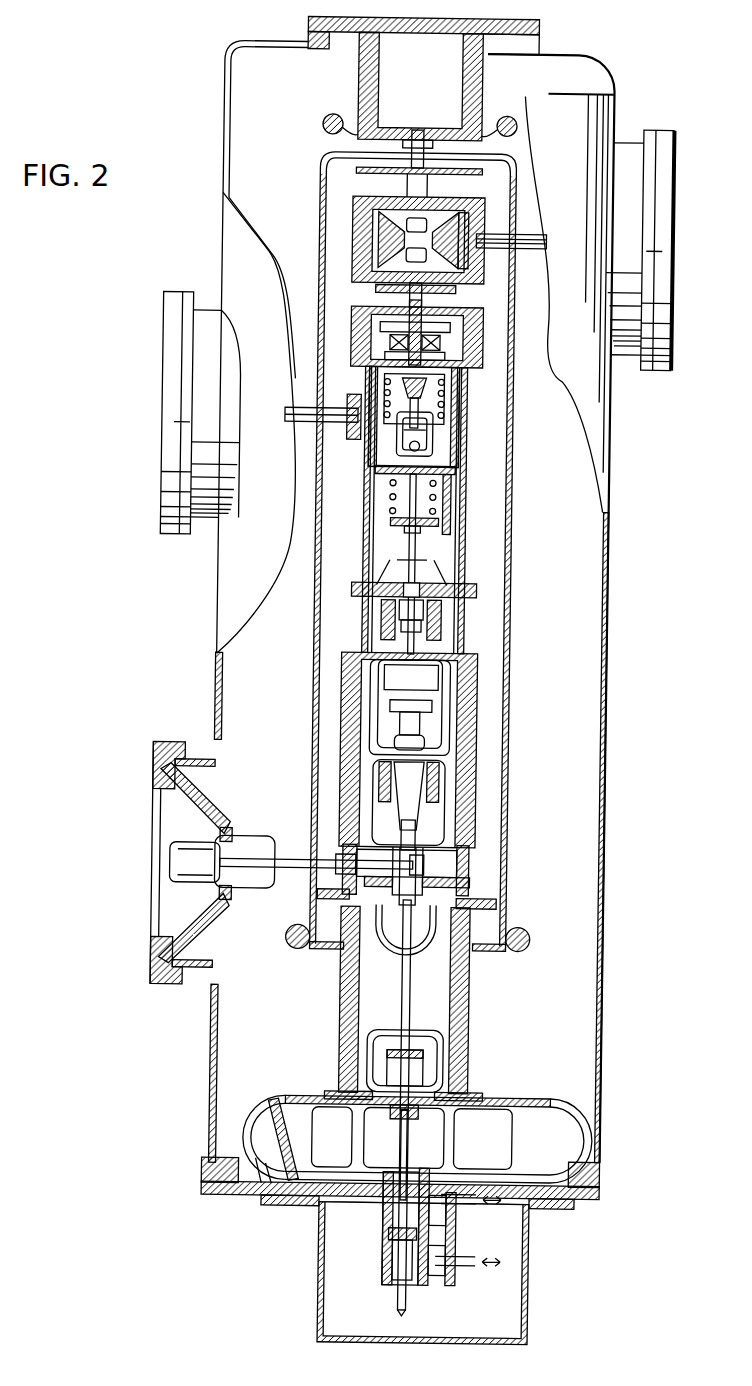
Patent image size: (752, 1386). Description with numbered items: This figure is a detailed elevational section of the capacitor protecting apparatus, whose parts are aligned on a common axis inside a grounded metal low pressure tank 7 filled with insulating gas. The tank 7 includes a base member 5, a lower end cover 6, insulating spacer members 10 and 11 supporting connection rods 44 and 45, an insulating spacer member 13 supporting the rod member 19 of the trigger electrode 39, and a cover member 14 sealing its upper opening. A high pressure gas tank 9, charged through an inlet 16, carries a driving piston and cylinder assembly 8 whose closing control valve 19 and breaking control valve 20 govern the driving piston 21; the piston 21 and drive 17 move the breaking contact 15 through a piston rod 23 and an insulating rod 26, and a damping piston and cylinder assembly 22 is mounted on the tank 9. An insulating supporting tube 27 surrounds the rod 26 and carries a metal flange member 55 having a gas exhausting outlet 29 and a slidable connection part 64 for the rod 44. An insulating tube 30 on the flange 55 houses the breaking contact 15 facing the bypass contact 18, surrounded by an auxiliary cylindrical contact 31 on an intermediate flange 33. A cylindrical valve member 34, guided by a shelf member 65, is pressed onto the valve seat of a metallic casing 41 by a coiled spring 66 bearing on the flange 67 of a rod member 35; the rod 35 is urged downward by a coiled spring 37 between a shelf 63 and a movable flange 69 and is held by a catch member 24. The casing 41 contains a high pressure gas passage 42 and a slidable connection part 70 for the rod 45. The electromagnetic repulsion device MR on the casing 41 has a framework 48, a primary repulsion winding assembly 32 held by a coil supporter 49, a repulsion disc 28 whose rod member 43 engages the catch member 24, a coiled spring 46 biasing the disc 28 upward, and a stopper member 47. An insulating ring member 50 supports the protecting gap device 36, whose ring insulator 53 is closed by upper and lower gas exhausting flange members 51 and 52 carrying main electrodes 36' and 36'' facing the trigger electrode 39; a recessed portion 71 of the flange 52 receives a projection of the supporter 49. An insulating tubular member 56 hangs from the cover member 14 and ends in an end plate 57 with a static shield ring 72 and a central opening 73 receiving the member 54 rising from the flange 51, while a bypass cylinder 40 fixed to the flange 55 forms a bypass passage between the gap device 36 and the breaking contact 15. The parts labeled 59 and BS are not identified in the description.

The base member 5 is at (606, 1193).
The lower end cover 6 is at (420, 1343).
The tank 7 is at (606, 612).
The driving cylinder 8 is at (390, 1216).
The high pressure gas tank 9 is at (545, 1100).
The insulating spacer member 10 is at (154, 935).
The insulating spacer member 11 is at (158, 318).
The insulating spacer member 13 is at (668, 135).
The cover member 14 is at (530, 33).
The breaking contact 15 is at (440, 785).
The high pressure gas charging inlet 16 is at (262, 1185).
The drive 17 is at (404, 1288).
The bypass contact 18 is at (425, 720).
The closing control valve 19 is at (541, 238).
The breaking control valve 20 is at (480, 1206).
The driving piston 21 is at (396, 1246).
The damping piston and cylinder assembly 22 is at (448, 1078).
The piston rod 23 is at (414, 1138).
The catch member 24 is at (372, 470).
The insulating rod 26 is at (414, 985).
The supporting tube 27 is at (473, 1012).
The electromagnetic repulsion disc 28 is at (380, 375).
The gas exhausting outlet 29 is at (471, 858).
The insulating tube 30 is at (477, 722).
The auxiliary stationary cylindrical contact 31 is at (370, 720).
The primary repulsion winding assembly 32 is at (440, 356).
The intermediate flange 33 is at (350, 625).
The cylindrical valve member 34 is at (440, 606).
The rod member 35 is at (405, 545).
The protecting gap device 36 is at (367, 218).
The main electrode 36' is at (490, 201).
The main electrode 36'' is at (482, 277).
The coiled spring 37 is at (386, 497).
The trigger electrode 39 is at (462, 225).
The bypass cylinder 40 is at (313, 760).
The cylindrical casing 41 is at (467, 515).
The high pressure gas passage 42 is at (463, 430).
The rod member 43 is at (380, 395).
The connection rod 44 is at (296, 872).
The connection rod 45 is at (285, 423).
The coiled spring 46 is at (440, 400).
The stopper member 47 is at (422, 380).
The framework 48 is at (455, 412).
The coil supporter 49 is at (435, 345).
The electric insulator ring member 50 is at (478, 330).
The upper gas exhausting flange member 51 is at (349, 171).
The lower gas exhausting flange member 52 is at (370, 289).
The ring insulator 53 is at (346, 220).
The projection member 54 is at (418, 135).
The flange member 55 is at (499, 900).
The electrically insulating tubular member 56 is at (350, 80).
The end plate 57 is at (460, 120).
The bracket 59 is at (430, 440).
The shelf 63 is at (448, 480).
The slidable connection part 64 is at (338, 865).
The shelf member 65 is at (380, 608).
The coiled spring 66 is at (422, 615).
The flange 67 is at (400, 628).
The movable flange 69 is at (388, 522).
The slidable connection part 70 is at (355, 440).
The recessed portion 71 is at (416, 320).
The electrical static shield ring 72 is at (509, 125).
The opening 73 is at (404, 140).
The electromagnetic repulsion device MR is at (375, 327).
The body section BS is at (477, 760).